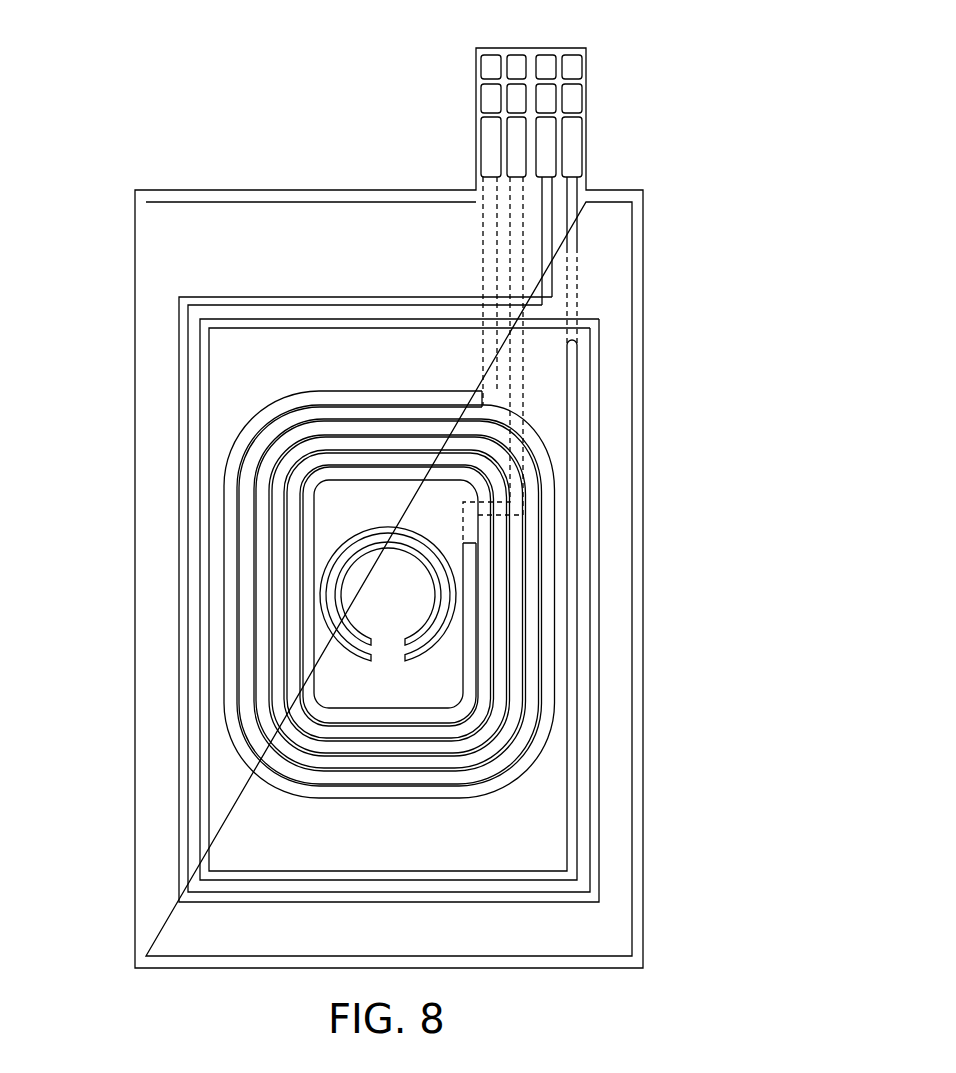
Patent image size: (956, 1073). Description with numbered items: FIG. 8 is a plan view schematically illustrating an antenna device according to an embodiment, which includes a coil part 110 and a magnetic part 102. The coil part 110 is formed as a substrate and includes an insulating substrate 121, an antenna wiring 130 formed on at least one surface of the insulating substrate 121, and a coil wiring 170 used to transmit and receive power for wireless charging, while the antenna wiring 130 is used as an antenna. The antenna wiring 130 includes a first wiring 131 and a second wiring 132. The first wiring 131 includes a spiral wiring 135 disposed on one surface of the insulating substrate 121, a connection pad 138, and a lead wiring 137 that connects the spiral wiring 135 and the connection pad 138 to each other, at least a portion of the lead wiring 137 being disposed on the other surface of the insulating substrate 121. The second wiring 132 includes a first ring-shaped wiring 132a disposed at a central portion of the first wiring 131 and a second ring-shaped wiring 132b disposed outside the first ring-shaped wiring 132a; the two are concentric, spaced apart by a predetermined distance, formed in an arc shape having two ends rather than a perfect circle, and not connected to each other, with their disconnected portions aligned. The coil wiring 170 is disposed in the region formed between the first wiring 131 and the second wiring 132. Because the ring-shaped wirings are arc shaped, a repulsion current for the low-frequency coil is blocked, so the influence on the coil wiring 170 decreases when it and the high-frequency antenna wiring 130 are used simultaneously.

The magnetic part 102 is at (645, 303).
The coil part 110 is at (636, 226).
The insulating substrate 121 is at (617, 847).
The antenna wiring 130 is at (486, 483).
The first wiring 131 is at (461, 478).
The spiral wiring 135 is at (356, 297).
The lead wiring 137 is at (550, 222).
The connection pad 138 is at (543, 142).
The second wiring 132 is at (557, 628).
The first ring-shaped wiring 132a is at (407, 643).
The second ring-shaped wiring 132b is at (443, 636).
The coil wiring 170 is at (508, 793).